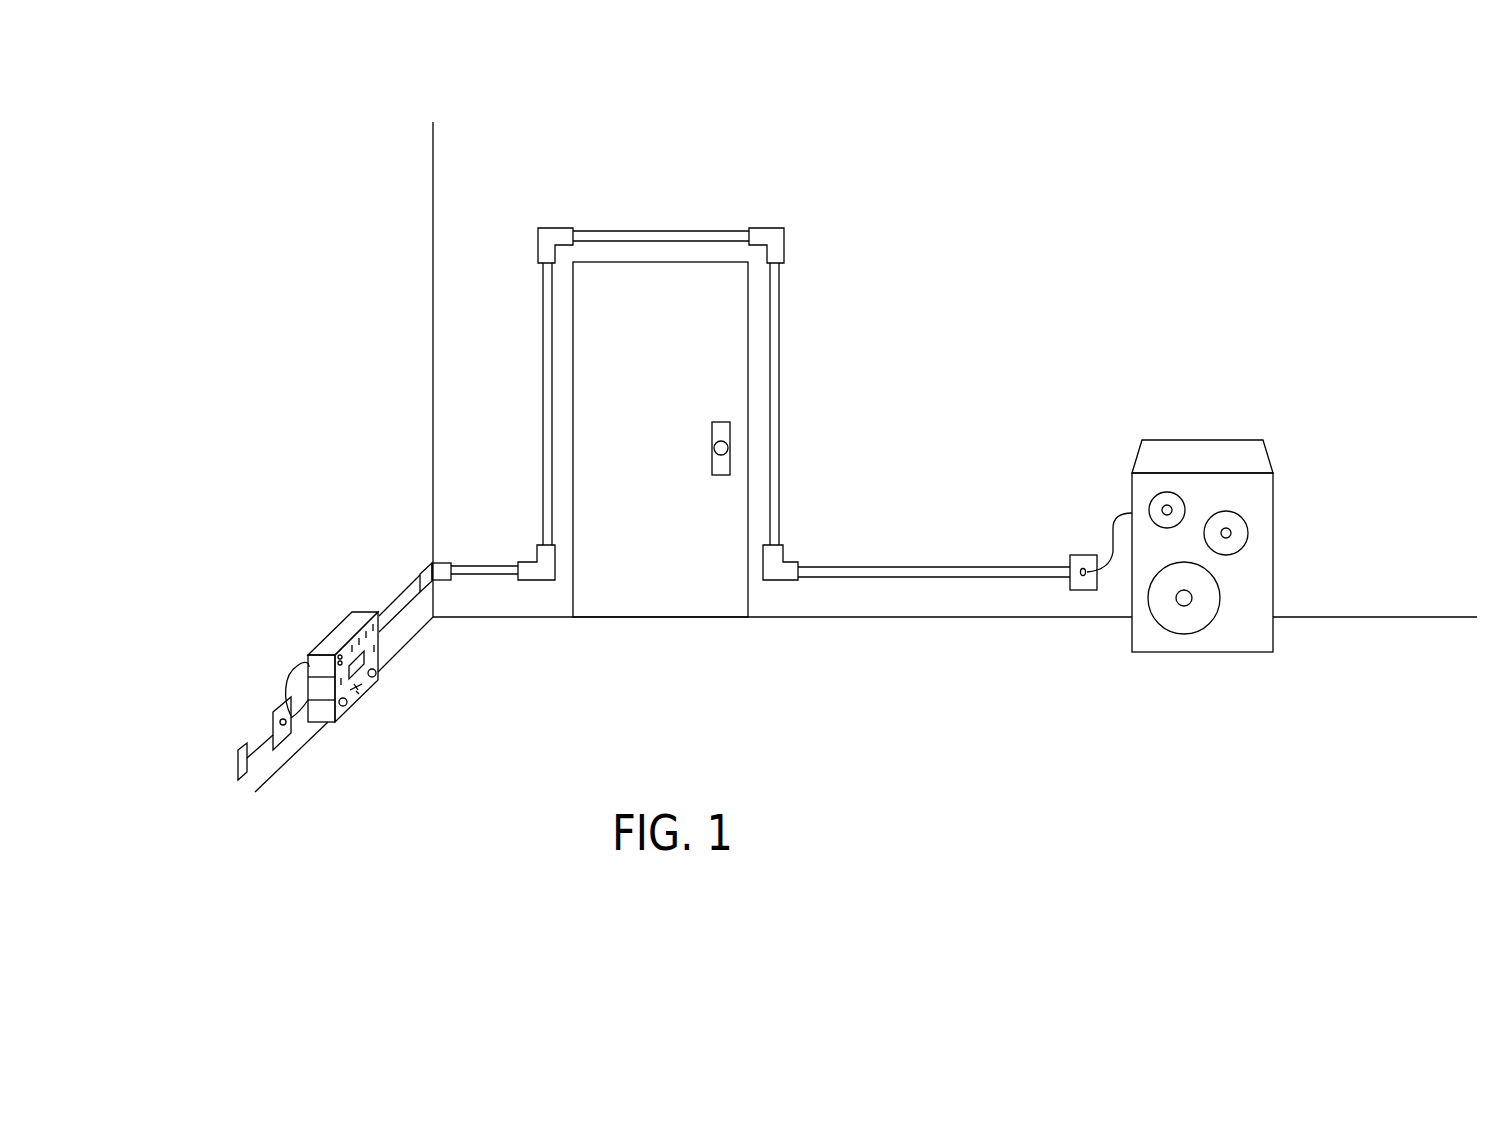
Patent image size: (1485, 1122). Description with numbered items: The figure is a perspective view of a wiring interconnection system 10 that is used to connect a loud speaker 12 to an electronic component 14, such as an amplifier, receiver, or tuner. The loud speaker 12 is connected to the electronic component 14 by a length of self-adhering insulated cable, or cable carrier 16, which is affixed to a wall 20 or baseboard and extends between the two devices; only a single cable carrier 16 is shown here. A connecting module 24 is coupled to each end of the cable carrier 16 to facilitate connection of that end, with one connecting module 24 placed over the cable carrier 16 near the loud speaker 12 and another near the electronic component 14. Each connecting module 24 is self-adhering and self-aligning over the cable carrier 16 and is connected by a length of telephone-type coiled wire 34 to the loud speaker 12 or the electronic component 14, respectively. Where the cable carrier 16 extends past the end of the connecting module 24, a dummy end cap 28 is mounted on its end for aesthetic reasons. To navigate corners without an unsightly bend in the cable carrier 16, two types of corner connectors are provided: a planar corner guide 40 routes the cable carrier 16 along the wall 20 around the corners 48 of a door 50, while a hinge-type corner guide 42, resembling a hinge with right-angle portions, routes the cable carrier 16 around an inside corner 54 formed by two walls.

The wiring interconnection system 10 is at (986, 765).
The loud speaker 12 is at (1157, 652).
The electronic component 14 is at (357, 700).
The cable carrier 16 is at (663, 232).
The wall 20 is at (195, 510).
The connecting module 24 is at (1070, 560).
The end cap 28 is at (237, 767).
The coiled wire 34 is at (1115, 522).
The planar corner guide 40 is at (547, 225).
The hinge-type corner guide 42 is at (430, 565).
The corner 48 is at (749, 598).
The door 50 is at (650, 580).
The inside corner 54 is at (432, 458).